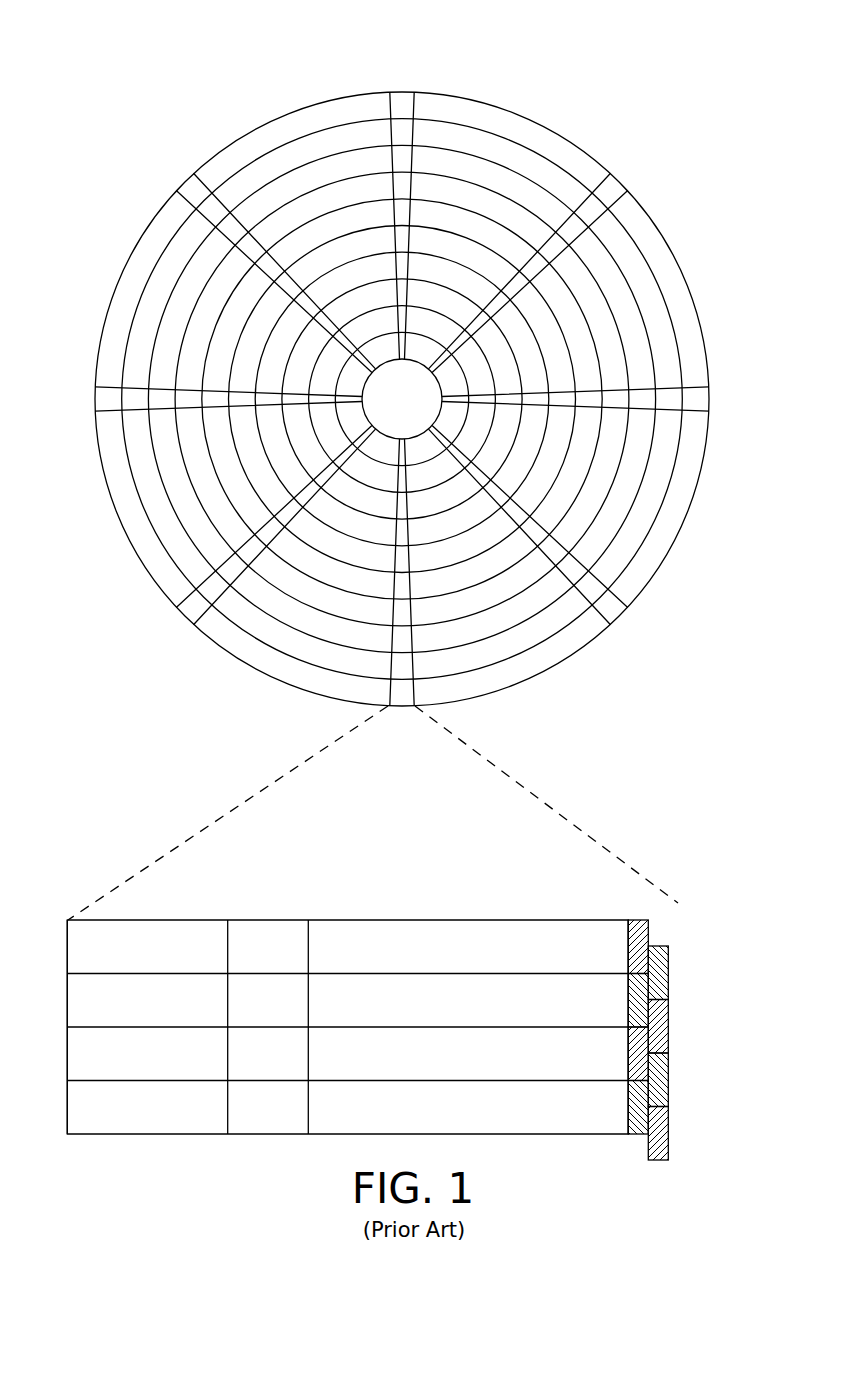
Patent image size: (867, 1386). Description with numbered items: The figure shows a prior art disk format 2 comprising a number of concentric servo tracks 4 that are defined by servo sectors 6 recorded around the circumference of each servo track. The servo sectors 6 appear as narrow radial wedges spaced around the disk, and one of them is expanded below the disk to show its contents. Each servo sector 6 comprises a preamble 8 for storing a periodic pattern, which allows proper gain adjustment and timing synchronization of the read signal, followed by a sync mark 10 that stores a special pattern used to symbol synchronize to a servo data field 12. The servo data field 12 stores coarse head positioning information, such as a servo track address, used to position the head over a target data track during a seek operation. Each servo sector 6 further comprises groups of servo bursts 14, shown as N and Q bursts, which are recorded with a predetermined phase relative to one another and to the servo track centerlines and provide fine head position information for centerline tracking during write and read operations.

The disk format 2 is at (172, 95).
The servo tracks 4 is at (527, 140).
The servo sectors 6 is at (262, 778).
The preamble 8 is at (156, 920).
The sync mark 10 is at (271, 920).
The servo data field 12 is at (456, 920).
The servo bursts 14 is at (670, 914).